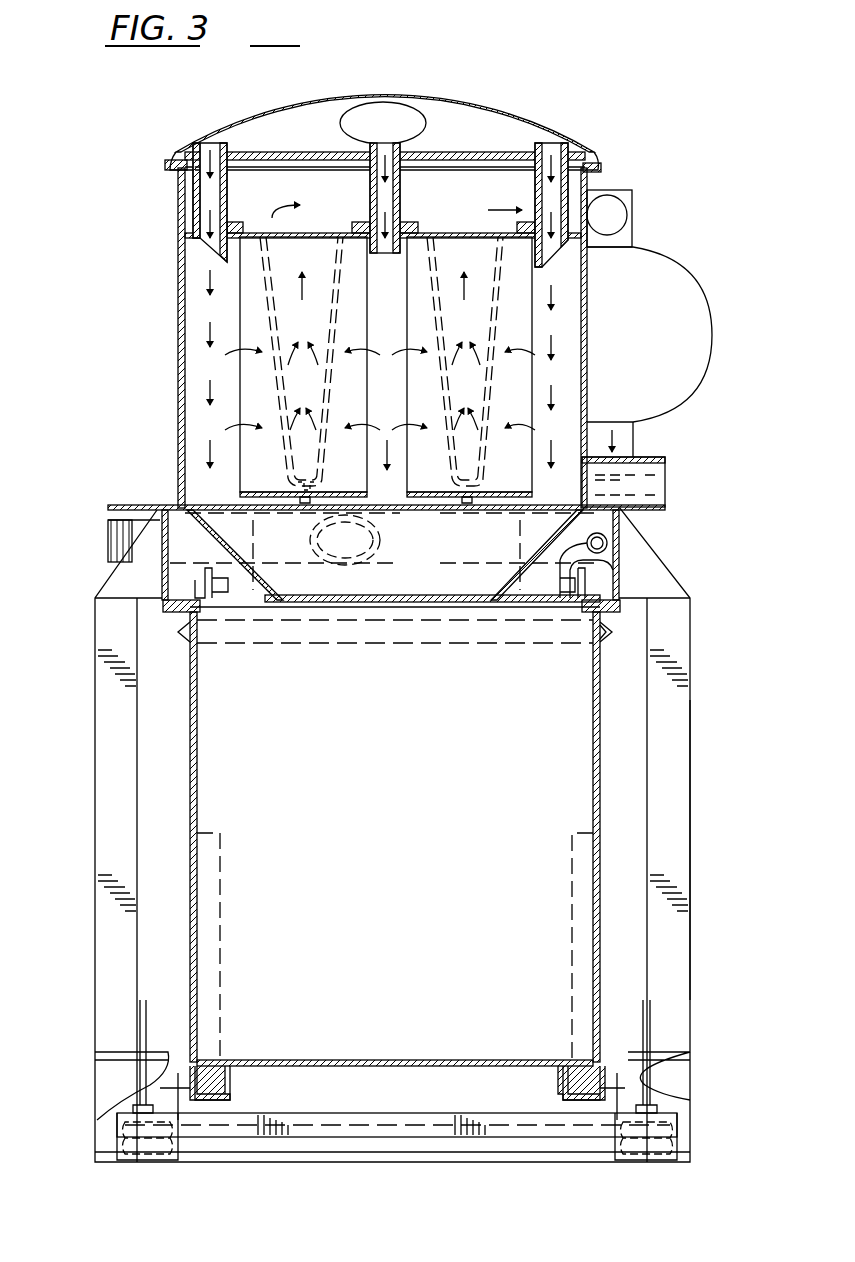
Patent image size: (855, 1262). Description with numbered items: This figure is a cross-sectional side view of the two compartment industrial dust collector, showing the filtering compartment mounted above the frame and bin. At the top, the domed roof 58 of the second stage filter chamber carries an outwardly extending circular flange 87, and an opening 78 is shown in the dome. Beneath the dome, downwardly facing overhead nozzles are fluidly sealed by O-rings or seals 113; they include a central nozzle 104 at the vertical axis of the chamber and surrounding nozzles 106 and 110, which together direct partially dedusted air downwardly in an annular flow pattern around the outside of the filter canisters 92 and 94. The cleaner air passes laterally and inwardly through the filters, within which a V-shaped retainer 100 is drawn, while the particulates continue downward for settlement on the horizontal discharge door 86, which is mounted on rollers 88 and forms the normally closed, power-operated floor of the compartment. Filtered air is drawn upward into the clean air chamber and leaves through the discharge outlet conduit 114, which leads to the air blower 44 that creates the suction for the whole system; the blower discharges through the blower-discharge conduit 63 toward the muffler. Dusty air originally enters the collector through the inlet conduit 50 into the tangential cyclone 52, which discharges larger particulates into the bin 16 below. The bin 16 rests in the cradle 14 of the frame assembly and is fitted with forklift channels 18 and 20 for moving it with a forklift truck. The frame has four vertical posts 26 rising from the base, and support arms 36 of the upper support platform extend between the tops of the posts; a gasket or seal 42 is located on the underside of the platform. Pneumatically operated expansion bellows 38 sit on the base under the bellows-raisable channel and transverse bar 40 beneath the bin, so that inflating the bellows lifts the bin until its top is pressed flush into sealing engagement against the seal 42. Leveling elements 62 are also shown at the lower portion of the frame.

The domed roof 58 is at (452, 92).
The inlet opening 78 is at (428, 127).
The circular flange 87 is at (176, 168).
The O-rings or seals 113 is at (430, 170).
The discharge outlet conduit 114 is at (612, 192).
The air blower 44 is at (712, 325).
The blower-discharge conduit 63 is at (665, 472).
The nozzle 106 is at (208, 255).
The central nozzle 104 is at (385, 253).
The nozzle 110 is at (556, 252).
The filter cone 100 is at (290, 370).
The filter canister 92 is at (265, 430).
The filter canister 94 is at (532, 400).
The inlet conduit 50 is at (108, 540).
The tangential cyclone 52 is at (382, 540).
The discharge door 86 is at (377, 603).
The rollers 88 is at (605, 582).
The support arms 36 is at (675, 590).
The gasket or seal 42 is at (612, 612).
The vertical posts 26 is at (695, 877).
The leveling leg 62 is at (650, 1025).
The bin or hopper 16 is at (392, 1058).
The cradle 14 is at (275, 1066).
The forklift channel 20 is at (232, 1090).
The forklift channel 18 is at (560, 1080).
The bellows-raisable channel and transverse bar 40 is at (387, 1137).
The expansion bellows 38 is at (672, 1160).